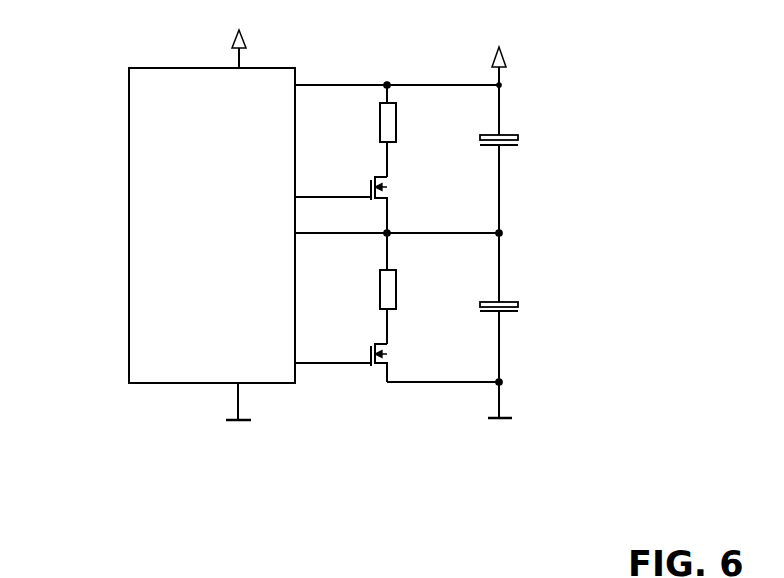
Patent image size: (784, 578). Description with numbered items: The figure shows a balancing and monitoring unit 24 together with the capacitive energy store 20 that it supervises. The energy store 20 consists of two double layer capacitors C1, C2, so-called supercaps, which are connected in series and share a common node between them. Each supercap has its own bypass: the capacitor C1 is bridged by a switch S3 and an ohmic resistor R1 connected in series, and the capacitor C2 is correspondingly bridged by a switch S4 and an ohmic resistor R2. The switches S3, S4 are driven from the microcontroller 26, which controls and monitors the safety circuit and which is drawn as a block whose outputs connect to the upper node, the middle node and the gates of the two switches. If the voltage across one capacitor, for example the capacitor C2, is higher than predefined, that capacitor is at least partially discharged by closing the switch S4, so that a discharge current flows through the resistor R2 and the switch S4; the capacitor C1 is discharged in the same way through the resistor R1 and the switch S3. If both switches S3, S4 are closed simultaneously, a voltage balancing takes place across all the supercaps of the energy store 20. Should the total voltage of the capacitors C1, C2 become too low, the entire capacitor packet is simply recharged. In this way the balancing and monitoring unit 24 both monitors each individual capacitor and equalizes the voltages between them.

The microcontroller 26 is at (142, 110).
The balancing and monitoring unit 24 is at (396, 301).
The capacitive energy store 20 is at (519, 280).
The ohmic resistor R1 is at (405, 131).
The ohmic resistor R2 is at (405, 288).
The switch S3 is at (397, 205).
The switch S4 is at (397, 362).
The double layer capacitor C1 is at (533, 134).
The double layer capacitor C2 is at (533, 297).